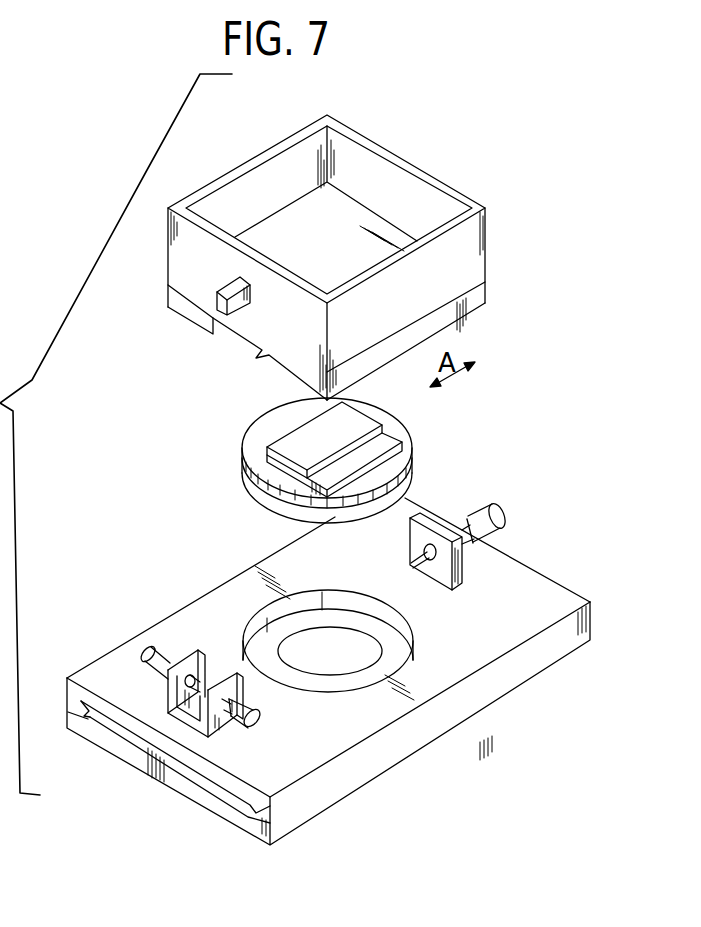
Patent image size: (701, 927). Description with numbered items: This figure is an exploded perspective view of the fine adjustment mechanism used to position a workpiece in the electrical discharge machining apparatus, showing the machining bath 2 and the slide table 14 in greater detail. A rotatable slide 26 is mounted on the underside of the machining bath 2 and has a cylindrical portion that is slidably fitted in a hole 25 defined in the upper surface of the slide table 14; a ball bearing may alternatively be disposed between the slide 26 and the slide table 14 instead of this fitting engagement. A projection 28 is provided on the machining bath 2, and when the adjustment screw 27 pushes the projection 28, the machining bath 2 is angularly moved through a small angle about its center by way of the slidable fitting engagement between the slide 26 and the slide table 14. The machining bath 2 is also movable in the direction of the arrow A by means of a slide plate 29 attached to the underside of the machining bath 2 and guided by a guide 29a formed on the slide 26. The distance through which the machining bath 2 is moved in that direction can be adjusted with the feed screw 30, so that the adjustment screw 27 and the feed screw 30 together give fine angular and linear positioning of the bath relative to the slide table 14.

The machining bath 2 is at (413, 190).
The slide table 14 is at (540, 585).
The hole 25 is at (263, 617).
The rotatable slide 26 is at (263, 502).
The adjustment screw 27 is at (157, 660).
The projection 28 is at (217, 303).
The slide plate 29 is at (268, 356).
The guide 29a is at (263, 458).
The feed screw 30 is at (501, 505).